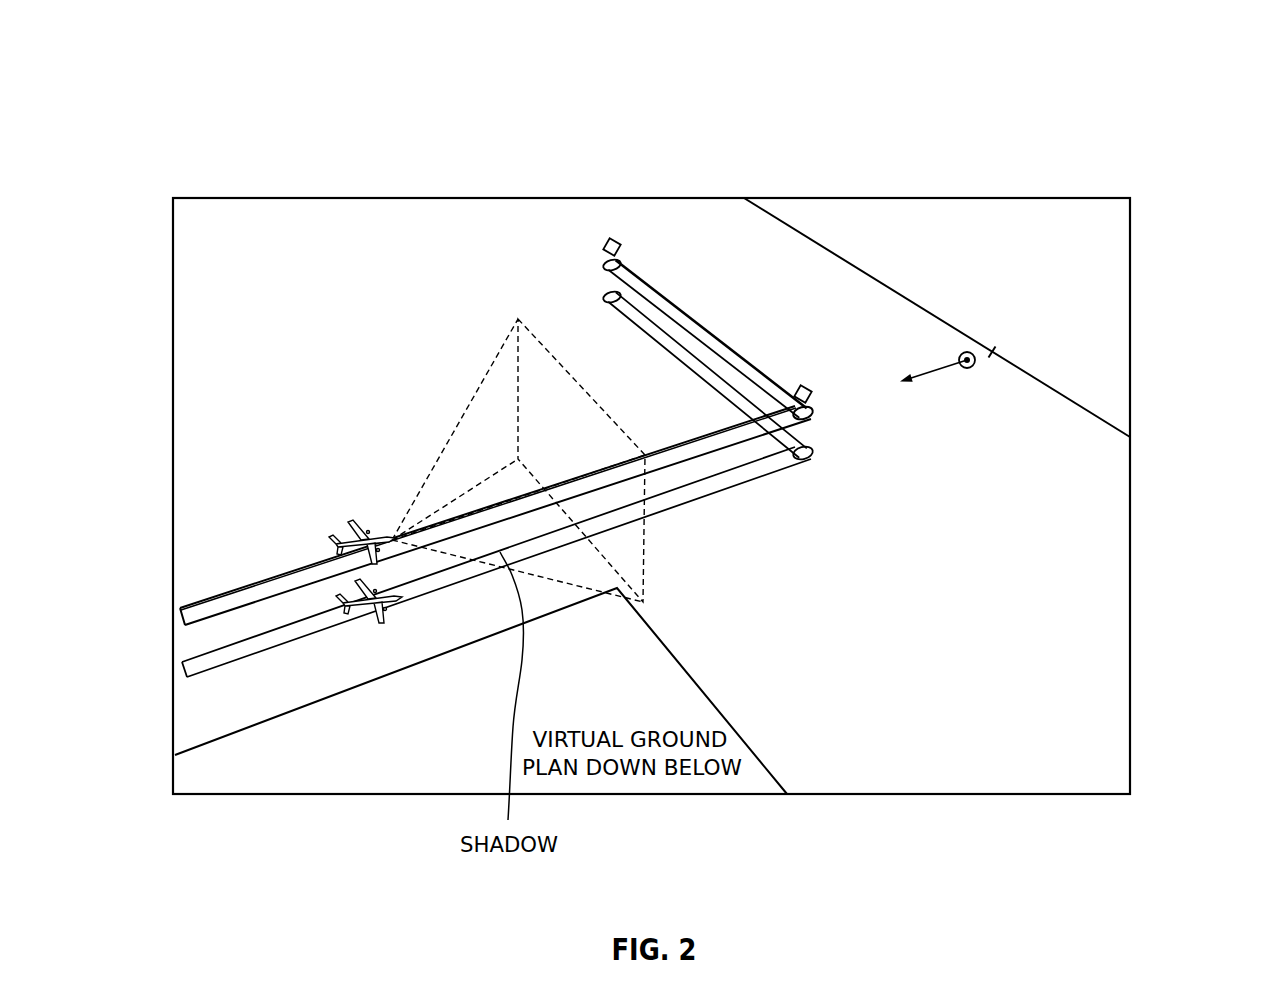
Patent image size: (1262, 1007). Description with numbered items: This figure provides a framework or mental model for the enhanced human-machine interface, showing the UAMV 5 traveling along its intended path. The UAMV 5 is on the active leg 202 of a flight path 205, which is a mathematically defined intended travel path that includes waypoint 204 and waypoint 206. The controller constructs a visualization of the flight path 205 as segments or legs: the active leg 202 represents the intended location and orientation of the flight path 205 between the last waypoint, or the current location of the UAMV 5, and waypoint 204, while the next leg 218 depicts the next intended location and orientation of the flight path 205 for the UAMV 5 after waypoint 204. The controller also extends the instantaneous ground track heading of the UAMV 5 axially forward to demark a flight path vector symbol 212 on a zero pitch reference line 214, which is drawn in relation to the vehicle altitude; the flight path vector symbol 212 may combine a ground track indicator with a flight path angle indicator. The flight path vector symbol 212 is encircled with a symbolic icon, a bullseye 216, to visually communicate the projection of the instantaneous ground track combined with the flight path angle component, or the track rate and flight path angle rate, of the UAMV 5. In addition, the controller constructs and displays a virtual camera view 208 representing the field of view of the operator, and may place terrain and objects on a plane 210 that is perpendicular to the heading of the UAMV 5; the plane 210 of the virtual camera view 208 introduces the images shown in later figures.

The UAMV 5 is at (395, 548).
The active leg 202 is at (672, 457).
The waypoint 204 is at (805, 388).
The flight path 205 is at (800, 458).
The waypoint 206 is at (607, 242).
The virtual camera view 208 is at (477, 437).
The plane 210 is at (567, 408).
The flight path vector symbol 212 is at (993, 350).
The zero pitch reference line 214 is at (1032, 373).
The bullseye 216 is at (965, 352).
The next leg 218 is at (686, 322).